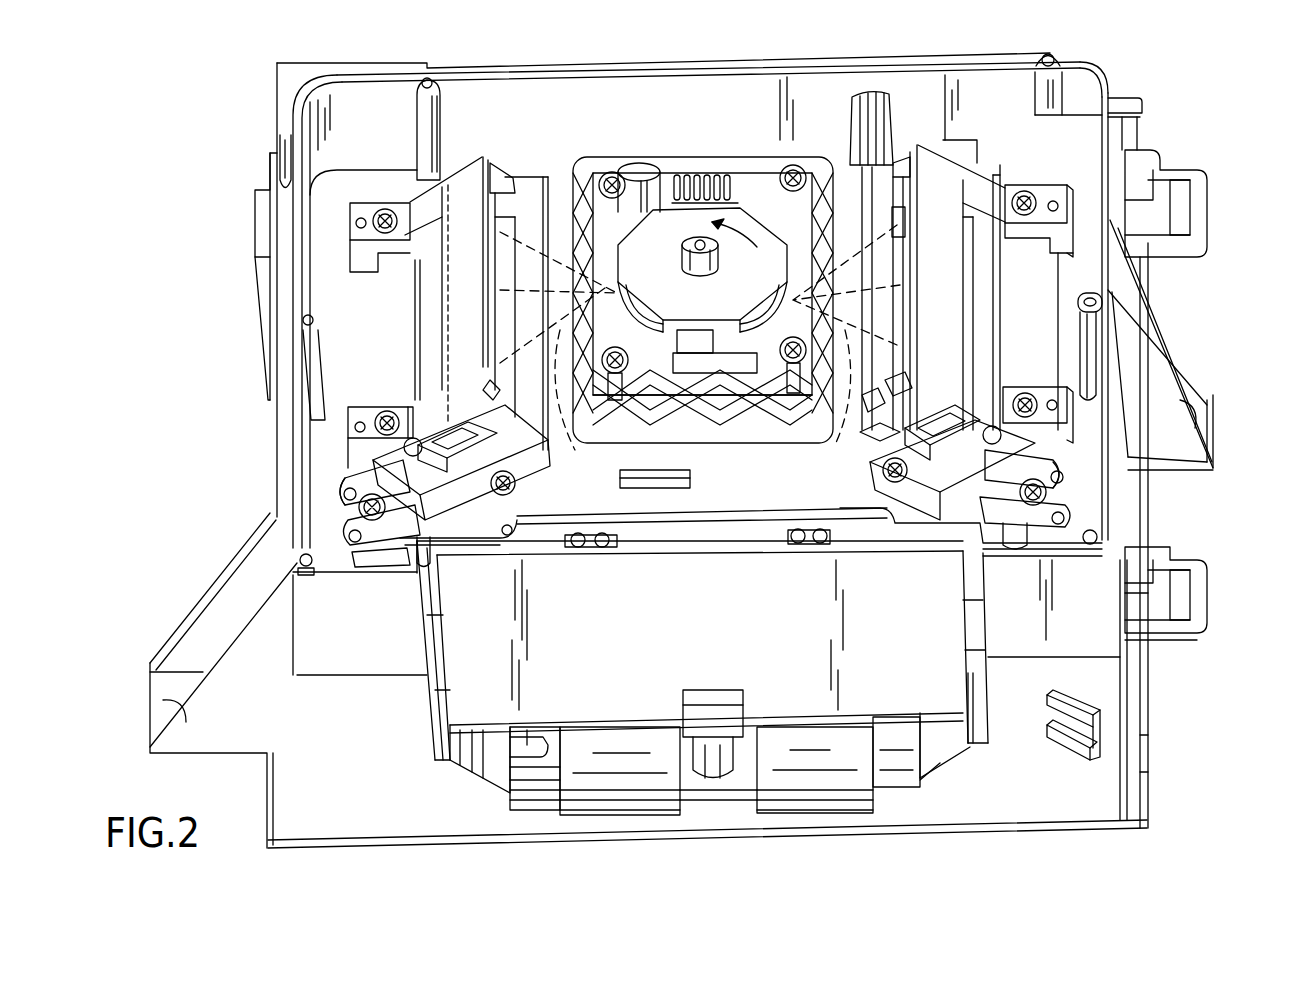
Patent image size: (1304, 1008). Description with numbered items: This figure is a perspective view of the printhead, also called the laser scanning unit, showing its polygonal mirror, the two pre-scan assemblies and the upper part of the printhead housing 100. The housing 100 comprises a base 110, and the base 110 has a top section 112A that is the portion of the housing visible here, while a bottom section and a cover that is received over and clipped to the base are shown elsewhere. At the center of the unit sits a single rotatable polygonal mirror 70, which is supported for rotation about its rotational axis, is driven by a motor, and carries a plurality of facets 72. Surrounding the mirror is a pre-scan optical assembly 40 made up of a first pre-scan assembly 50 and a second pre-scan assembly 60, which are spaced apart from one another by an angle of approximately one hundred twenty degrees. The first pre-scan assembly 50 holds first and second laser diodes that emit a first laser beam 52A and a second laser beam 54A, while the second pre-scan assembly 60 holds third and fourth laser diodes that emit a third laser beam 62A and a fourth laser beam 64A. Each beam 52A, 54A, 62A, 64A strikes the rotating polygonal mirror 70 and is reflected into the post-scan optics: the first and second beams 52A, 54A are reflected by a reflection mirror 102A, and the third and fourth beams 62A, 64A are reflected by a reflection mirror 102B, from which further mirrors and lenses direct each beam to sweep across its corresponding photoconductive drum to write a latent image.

The printhead housing 100 is at (1214, 228).
The base 110 is at (1178, 342).
The top section 112A is at (1113, 93).
The reflection mirror 102A is at (938, 185).
The reflection mirror 102B is at (453, 283).
The polygonal mirror 70 is at (668, 222).
The facets 72 is at (745, 215).
The pre-scan optical assembly 40 is at (337, 477).
The first pre-scan assembly 50 is at (1073, 485).
The second pre-scan assembly 60 is at (343, 513).
The first laser beam 52A is at (841, 453).
The second laser beam 54A is at (880, 380).
The third laser beam 62A is at (629, 470).
The fourth laser beam 64A is at (488, 380).